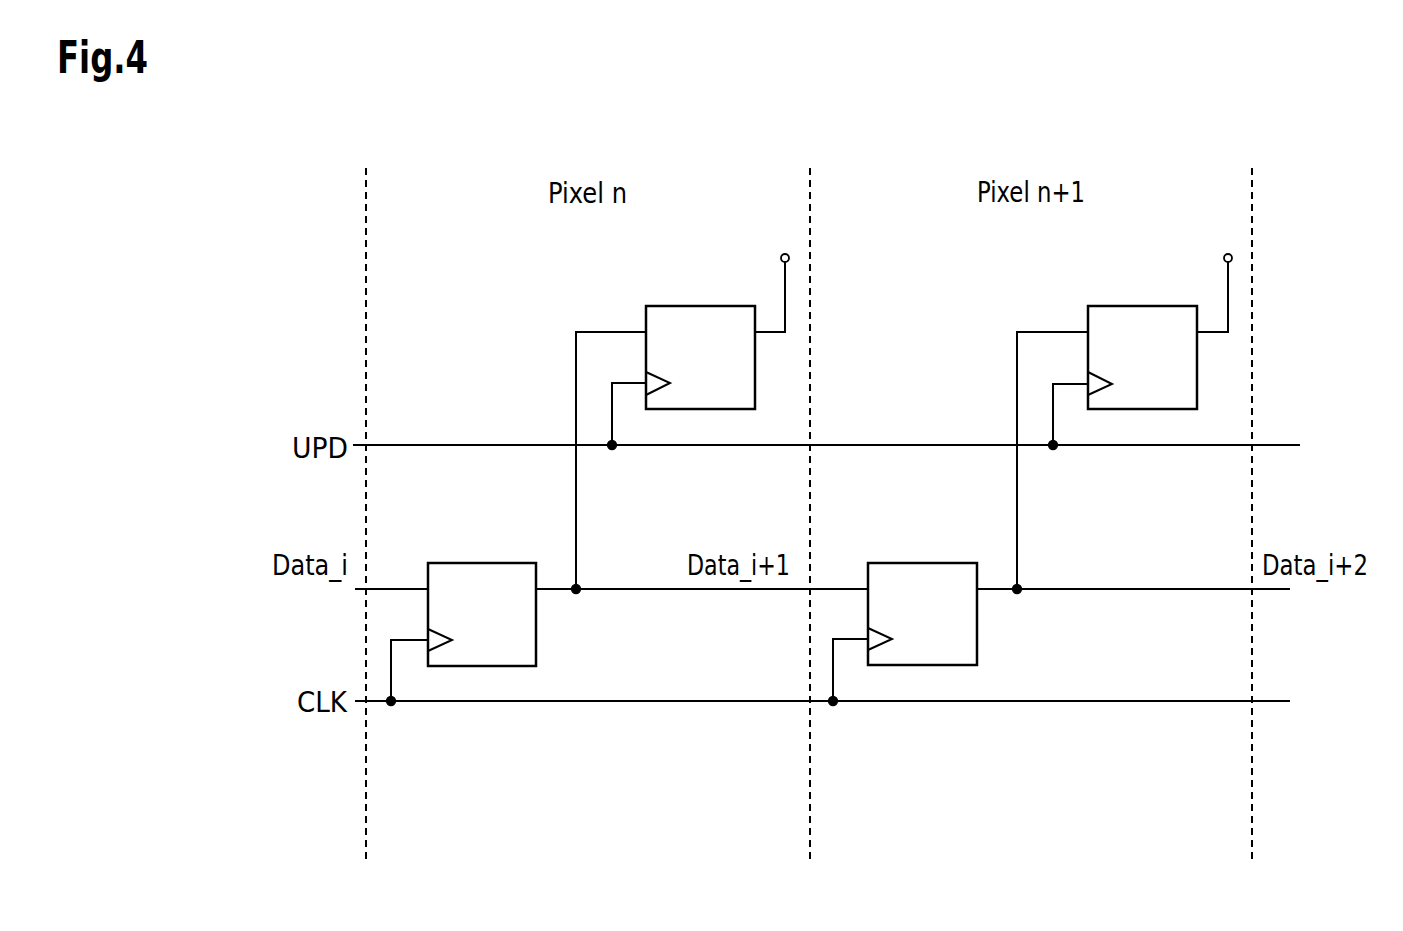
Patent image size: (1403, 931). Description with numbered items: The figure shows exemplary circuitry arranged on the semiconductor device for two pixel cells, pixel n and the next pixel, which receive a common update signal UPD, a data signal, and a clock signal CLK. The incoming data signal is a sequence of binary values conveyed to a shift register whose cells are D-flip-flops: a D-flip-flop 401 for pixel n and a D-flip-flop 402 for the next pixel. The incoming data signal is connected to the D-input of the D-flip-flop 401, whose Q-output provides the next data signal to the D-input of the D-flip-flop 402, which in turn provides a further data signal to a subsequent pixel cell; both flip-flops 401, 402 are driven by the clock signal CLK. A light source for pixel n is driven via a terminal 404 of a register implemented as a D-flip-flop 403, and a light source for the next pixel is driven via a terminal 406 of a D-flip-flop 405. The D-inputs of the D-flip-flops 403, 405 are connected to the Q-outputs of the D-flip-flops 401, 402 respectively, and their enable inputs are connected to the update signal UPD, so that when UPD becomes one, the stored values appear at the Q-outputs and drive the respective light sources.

The D-flip-flop 401 is at (537, 642).
The D-flip-flop 402 is at (978, 641).
The D-flip-flop 403 is at (691, 306).
The terminal 404 is at (780, 276).
The D-flip-flop 405 is at (1130, 306).
The terminal 406 is at (1221, 276).